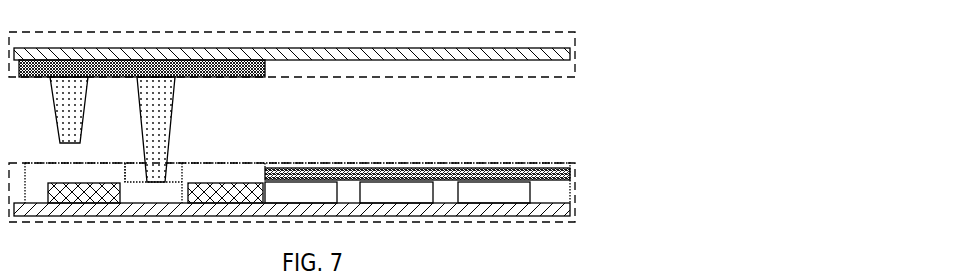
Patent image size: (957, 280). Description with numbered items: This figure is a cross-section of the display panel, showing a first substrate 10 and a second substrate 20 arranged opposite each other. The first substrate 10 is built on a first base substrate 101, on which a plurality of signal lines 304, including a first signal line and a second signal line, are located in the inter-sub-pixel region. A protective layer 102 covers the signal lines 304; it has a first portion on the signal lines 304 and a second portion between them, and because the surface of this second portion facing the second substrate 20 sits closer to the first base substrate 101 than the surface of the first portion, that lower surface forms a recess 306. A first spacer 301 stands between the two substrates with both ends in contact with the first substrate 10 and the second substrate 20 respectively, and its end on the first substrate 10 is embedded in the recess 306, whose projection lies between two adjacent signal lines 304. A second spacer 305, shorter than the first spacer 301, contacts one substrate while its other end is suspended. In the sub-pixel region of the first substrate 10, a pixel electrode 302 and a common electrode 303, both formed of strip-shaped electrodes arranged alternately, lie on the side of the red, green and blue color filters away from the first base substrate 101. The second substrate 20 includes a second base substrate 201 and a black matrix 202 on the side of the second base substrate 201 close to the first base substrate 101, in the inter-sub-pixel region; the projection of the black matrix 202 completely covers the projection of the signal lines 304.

The second substrate 20 is at (304, 70).
The second base substrate 201 is at (372, 49).
The black matrix 202 is at (243, 78).
The second spacer 305 is at (83, 110).
The first spacer 301 is at (170, 130).
The recess 306 is at (138, 173).
The first substrate 10 is at (307, 181).
The first base substrate 101 is at (558, 213).
The protective layer 102 is at (33, 178).
The signal lines 304 is at (48, 183).
The pixel electrode 302 is at (417, 163).
The common electrode 303 is at (462, 170).